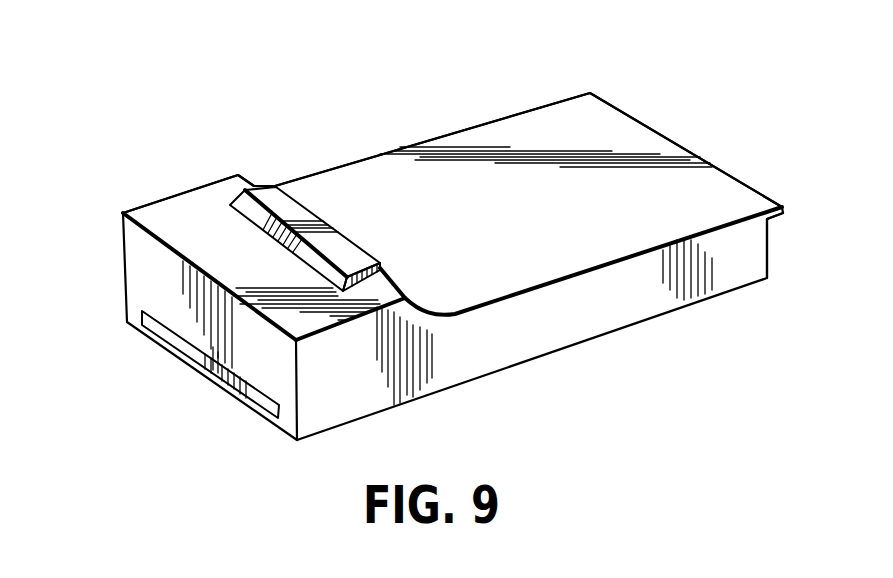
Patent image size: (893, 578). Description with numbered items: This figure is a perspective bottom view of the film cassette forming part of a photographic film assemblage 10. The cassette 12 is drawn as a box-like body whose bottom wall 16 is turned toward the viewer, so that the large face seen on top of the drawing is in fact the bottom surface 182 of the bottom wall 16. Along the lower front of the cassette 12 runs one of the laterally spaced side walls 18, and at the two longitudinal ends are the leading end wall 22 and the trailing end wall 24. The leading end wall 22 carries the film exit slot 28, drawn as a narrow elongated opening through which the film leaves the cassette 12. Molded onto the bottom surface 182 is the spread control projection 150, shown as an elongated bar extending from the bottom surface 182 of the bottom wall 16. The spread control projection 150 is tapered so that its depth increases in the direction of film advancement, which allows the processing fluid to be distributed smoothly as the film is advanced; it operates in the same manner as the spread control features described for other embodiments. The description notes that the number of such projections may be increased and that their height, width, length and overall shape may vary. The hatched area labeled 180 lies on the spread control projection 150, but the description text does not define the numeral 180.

The photographic film assemblage 10 is at (418, 75).
The cassette 12 is at (106, 233).
The bottom wall 16 is at (620, 145).
The side wall 18 is at (582, 327).
The leading end wall 22 is at (138, 287).
The trailing end wall 24 is at (765, 252).
The film exit slot 28 is at (217, 378).
The spread control projection 150 is at (343, 254).
The textured surface 180 is at (282, 242).
The bottom surface 182 is at (193, 208).